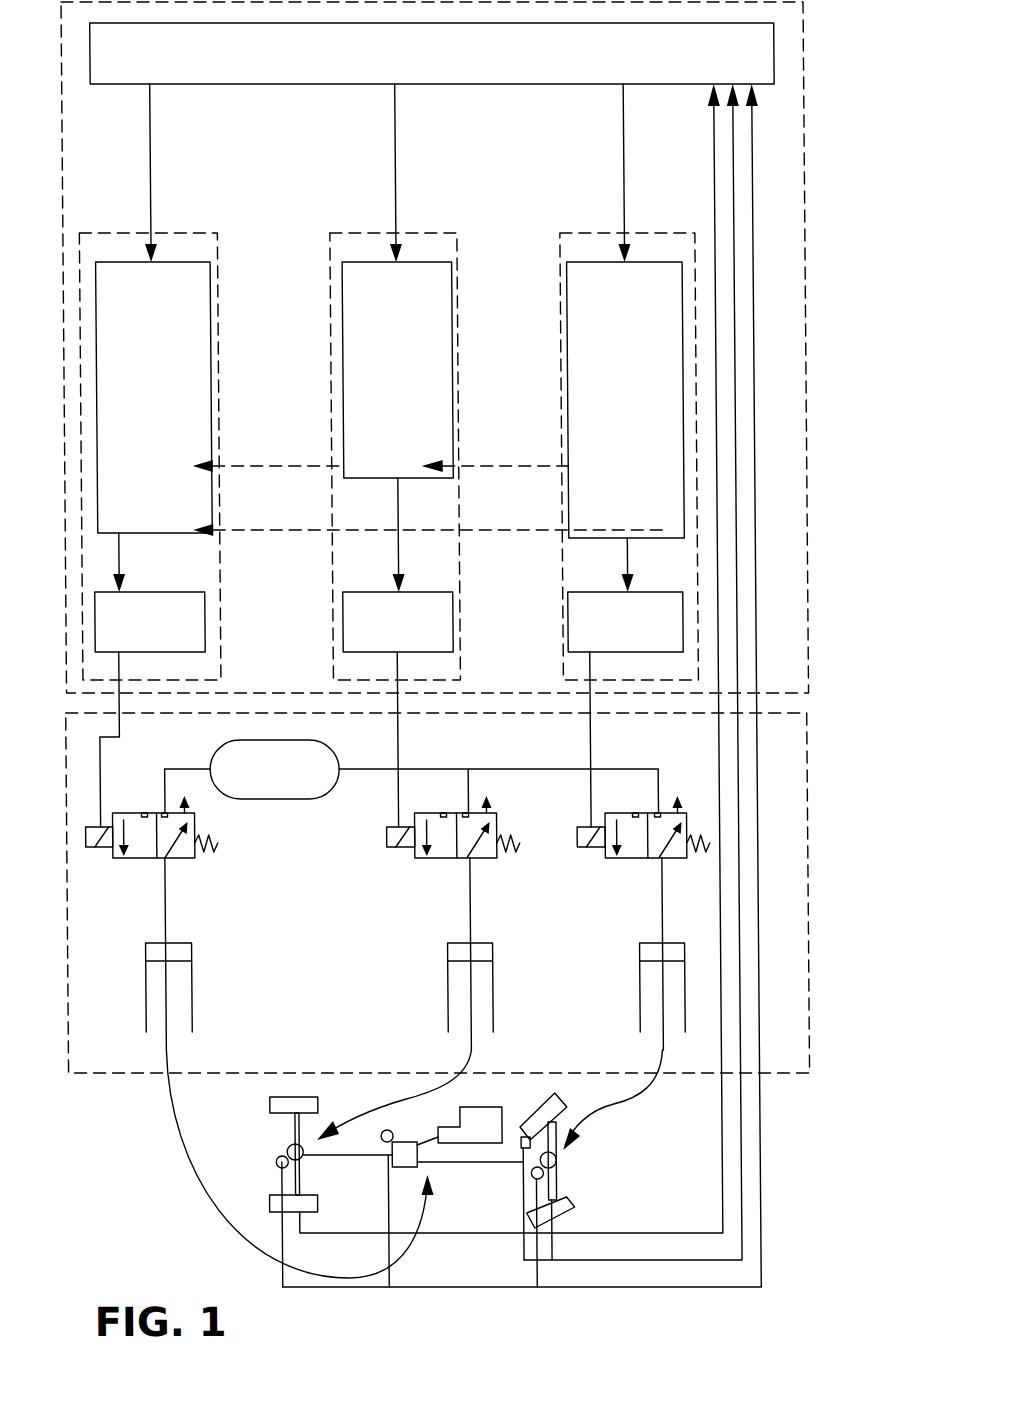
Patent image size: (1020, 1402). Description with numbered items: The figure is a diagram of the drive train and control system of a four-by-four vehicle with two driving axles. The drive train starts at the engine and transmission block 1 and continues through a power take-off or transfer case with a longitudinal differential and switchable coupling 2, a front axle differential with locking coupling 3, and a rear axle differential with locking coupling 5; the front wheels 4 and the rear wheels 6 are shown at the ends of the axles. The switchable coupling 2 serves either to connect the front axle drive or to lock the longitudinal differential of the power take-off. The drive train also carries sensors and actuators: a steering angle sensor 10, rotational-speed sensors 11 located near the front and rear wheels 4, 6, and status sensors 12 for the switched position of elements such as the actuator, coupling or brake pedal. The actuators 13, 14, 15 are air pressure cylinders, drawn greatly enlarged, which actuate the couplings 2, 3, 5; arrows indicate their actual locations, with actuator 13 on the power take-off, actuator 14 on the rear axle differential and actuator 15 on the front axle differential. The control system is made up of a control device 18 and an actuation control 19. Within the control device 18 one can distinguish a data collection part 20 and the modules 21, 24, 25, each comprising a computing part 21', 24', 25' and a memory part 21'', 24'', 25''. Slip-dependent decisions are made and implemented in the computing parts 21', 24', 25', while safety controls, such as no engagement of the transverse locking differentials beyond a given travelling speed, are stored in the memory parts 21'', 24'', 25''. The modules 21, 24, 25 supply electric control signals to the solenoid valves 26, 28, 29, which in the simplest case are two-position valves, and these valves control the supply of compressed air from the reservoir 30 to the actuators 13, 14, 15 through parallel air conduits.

The engine and transmission block 1 is at (464, 1145).
The switchable coupling 2 is at (396, 1143).
The front axle differential with locking coupling 3 is at (547, 1165).
The front wheels 4 is at (543, 1094).
The rear axle differential with locking coupling 5 is at (278, 1152).
The rear wheels 6 is at (261, 1105).
The steering angle sensor 10 is at (512, 1152).
The rotational-speed sensors 11 is at (296, 1095).
The status sensors 12 is at (377, 1130).
The actuator 13 is at (184, 978).
The actuator 14 is at (440, 990).
The actuator 15 is at (632, 1005).
The control device 18 is at (807, 393).
The actuation control 19 is at (808, 748).
The data collection part 20 is at (752, 47).
The module 21 is at (152, 417).
The computing part 21' is at (190, 397).
The memory part 21'' is at (194, 622).
The module 24 is at (394, 424).
The computing part 24' is at (429, 370).
The memory part 24'' is at (438, 622).
The module 25 is at (628, 423).
The computing part 25' is at (682, 400).
The memory part 25'' is at (691, 622).
The solenoid valve 26 is at (147, 813).
The solenoid valve 28 is at (446, 813).
The solenoid valve 29 is at (637, 813).
The reservoir 30 is at (287, 799).